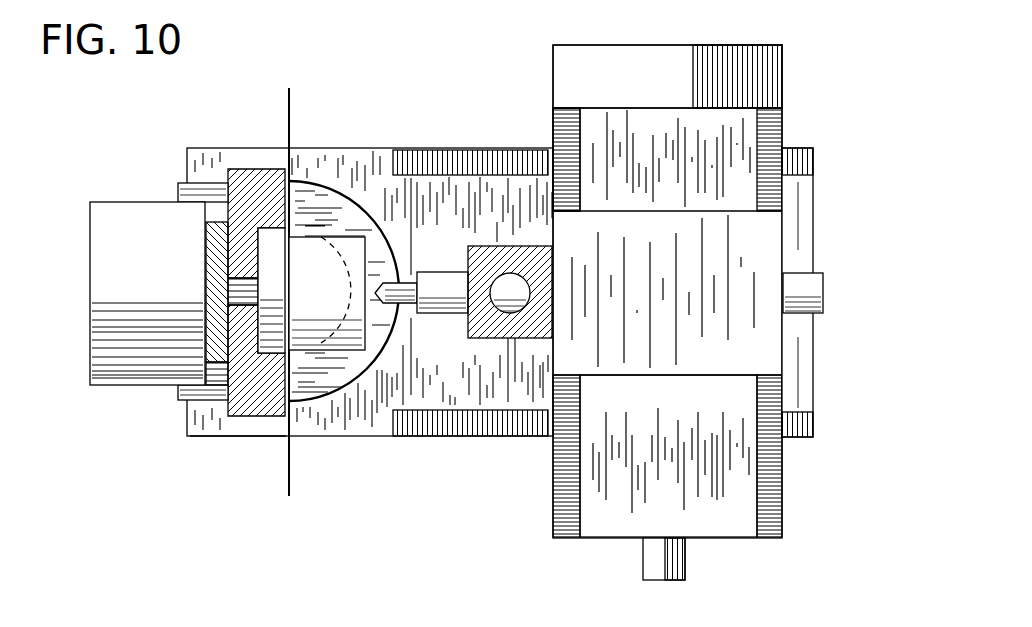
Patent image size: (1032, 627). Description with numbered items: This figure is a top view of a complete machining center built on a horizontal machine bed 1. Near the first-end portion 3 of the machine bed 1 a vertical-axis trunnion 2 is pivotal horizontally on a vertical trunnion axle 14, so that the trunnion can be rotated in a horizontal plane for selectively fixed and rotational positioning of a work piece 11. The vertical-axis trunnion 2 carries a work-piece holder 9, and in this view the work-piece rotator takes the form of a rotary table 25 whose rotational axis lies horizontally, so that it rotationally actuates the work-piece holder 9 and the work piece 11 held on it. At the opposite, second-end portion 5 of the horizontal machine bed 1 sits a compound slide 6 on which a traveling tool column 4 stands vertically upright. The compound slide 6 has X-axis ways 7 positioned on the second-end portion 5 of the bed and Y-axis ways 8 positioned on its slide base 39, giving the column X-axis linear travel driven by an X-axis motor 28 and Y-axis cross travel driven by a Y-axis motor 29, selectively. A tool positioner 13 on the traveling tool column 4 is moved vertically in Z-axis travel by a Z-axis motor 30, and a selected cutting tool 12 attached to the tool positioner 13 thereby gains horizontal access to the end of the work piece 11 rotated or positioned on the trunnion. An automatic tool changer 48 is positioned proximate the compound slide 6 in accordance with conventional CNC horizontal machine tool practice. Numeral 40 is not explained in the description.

The horizontal machine bed 1 is at (251, 426).
The vertical-axis trunnion 2 is at (343, 181).
The first-end portion 3 is at (187, 415).
The traveling tool column 4 is at (524, 250).
The second-end portion 5 is at (815, 212).
The compound slide 6 is at (823, 540).
The X-axis ways 7 is at (463, 160).
The Y-axis ways 8 is at (563, 122).
The work-piece holder 9 is at (257, 210).
The work piece 11 is at (291, 496).
The cutting tool 12 is at (395, 288).
The tool positioner 13 is at (445, 294).
The vertical trunnion axle 14 is at (353, 282).
The rotary table 25 is at (125, 265).
The X-axis motor 28 is at (655, 570).
The Y-axis motor 29 is at (805, 293).
The Z-axis motor 30 is at (513, 298).
The slide base 39 is at (673, 430).
The upper bearing block 40 is at (233, 193).
The automatic tool changer 48 is at (745, 78).